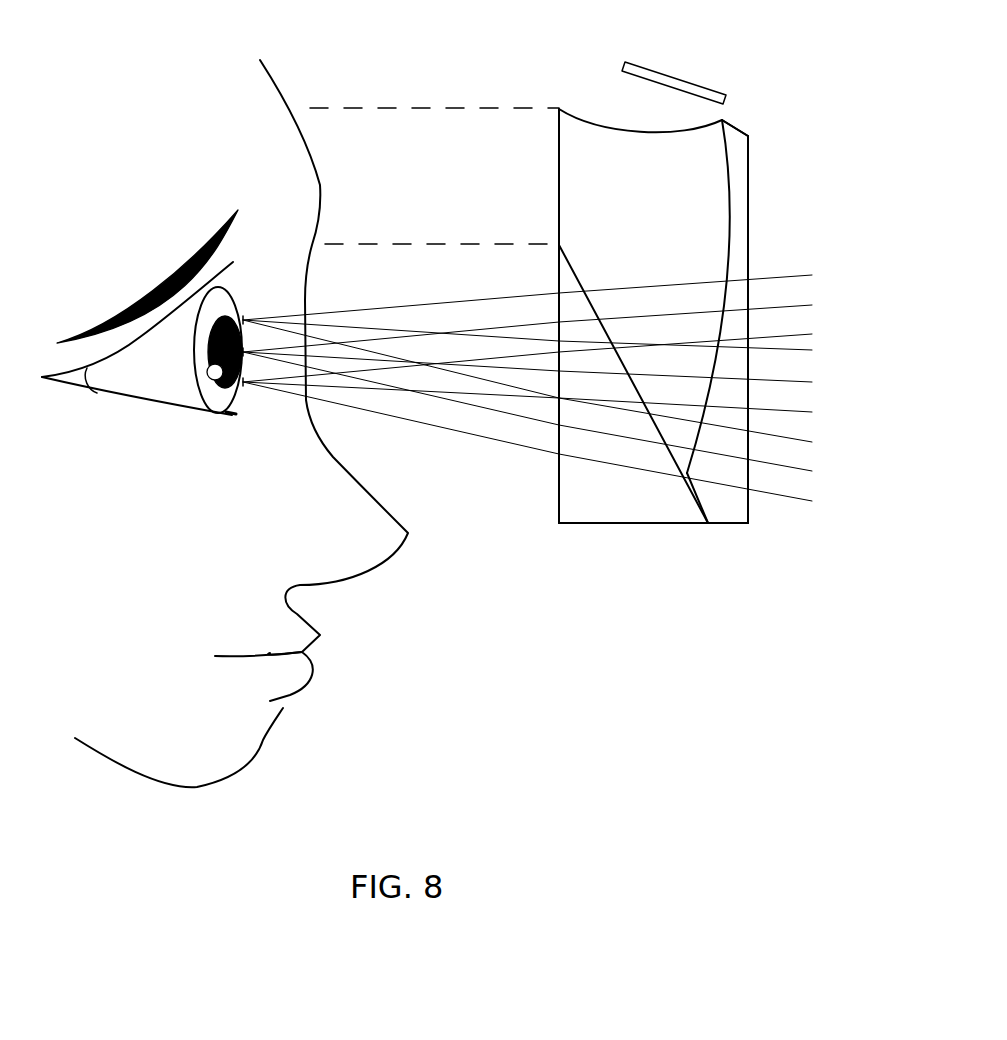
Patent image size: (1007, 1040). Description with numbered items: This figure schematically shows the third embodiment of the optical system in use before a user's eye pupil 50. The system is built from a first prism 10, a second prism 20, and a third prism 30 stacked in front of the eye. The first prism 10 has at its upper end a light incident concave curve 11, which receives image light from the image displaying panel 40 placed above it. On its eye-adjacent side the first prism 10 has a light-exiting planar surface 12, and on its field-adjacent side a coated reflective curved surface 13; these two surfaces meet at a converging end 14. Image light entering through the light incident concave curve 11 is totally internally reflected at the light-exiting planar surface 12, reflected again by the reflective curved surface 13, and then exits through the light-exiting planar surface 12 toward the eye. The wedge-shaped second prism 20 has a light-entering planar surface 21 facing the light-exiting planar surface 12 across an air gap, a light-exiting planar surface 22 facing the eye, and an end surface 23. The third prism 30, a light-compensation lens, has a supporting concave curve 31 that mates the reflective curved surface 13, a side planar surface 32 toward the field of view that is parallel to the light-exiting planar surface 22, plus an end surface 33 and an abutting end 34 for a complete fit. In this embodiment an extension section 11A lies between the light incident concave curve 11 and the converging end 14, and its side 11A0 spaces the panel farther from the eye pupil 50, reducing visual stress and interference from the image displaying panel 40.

The first prism 10 is at (567, 100).
The light incident concave curve 11 is at (594, 110).
The side of the extension section 11A0 is at (558, 182).
The extension section 11A is at (647, 186).
The light-exiting planar surface 12 is at (633, 384).
The light-entering planar surface 21 is at (582, 285).
The reflective curved surface 13 is at (754, 296).
The supporting concave curve 31 is at (730, 147).
The converging end 14 is at (680, 435).
The second prism 20 is at (545, 485).
The light-exiting planar surface 22 is at (558, 272).
The end surface 23 is at (598, 527).
The third prism 30 is at (760, 222).
The side planar surface 32 is at (750, 246).
The end surface 33 is at (738, 527).
The abutting end 34 is at (694, 500).
The image displaying panel 40 is at (680, 85).
The eye pupil 50 is at (147, 425).